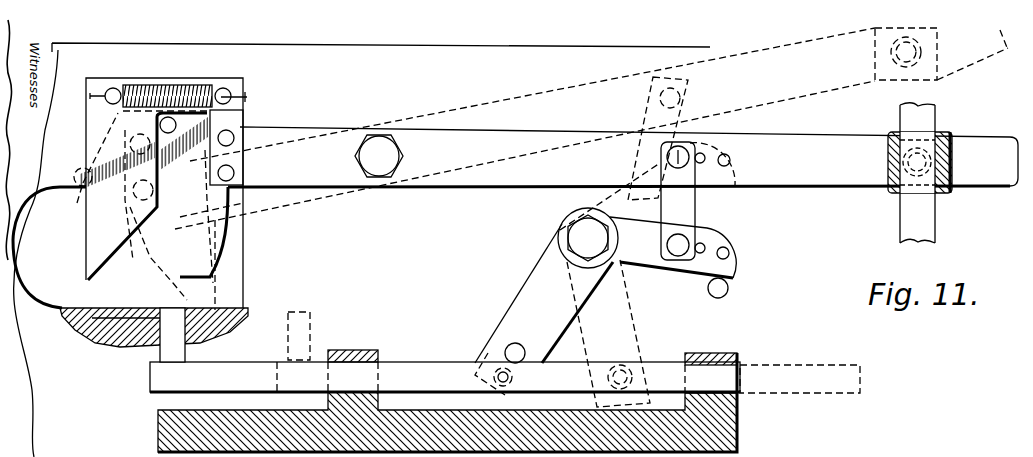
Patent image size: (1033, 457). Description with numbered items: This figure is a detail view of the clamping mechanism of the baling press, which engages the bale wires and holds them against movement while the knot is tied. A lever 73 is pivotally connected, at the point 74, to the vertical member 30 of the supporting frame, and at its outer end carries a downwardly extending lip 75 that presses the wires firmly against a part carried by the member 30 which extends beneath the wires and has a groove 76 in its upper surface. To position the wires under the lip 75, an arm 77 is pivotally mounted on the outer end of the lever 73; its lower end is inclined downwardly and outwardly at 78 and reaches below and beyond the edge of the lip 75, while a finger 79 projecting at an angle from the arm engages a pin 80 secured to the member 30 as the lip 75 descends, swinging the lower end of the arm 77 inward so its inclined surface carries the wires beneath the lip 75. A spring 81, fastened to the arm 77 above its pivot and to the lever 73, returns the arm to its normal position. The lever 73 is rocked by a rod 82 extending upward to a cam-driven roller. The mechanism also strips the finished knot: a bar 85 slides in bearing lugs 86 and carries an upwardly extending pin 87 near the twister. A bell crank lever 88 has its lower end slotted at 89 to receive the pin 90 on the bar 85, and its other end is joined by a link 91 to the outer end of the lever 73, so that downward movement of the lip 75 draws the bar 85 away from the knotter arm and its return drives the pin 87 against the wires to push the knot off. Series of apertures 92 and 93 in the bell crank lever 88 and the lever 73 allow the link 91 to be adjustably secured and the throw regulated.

The vertical member 30 is at (537, 33).
The lever 73 is at (295, 130).
The pivotal connection 74 is at (364, 150).
The lip 75 is at (212, 236).
The groove 76 is at (103, 307).
The arm 77 is at (100, 120).
The inclined lower end 78 is at (112, 262).
The finger 79 is at (170, 84).
The pin 80 is at (160, 125).
The spring 81 is at (136, 84).
The rod 82 is at (938, 114).
The bar 85 is at (428, 362).
The bearing lugs 86 is at (353, 350).
The pin 87 is at (177, 342).
The bell crank lever 88 is at (532, 272).
The slot 89 is at (517, 350).
The pin 90 is at (490, 380).
The link 91 is at (699, 219).
The apertures 92 is at (727, 249).
The apertures 93 is at (729, 158).